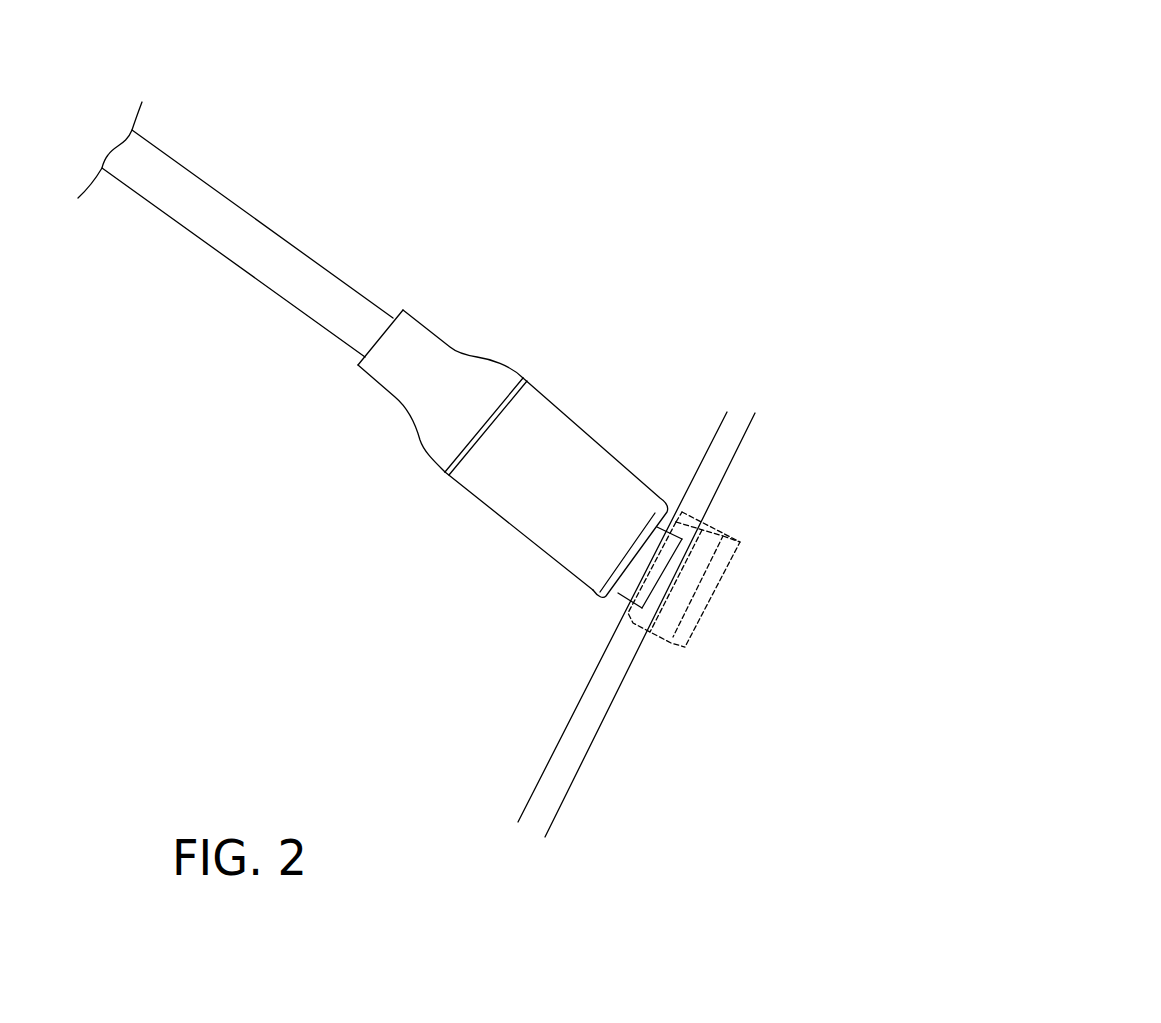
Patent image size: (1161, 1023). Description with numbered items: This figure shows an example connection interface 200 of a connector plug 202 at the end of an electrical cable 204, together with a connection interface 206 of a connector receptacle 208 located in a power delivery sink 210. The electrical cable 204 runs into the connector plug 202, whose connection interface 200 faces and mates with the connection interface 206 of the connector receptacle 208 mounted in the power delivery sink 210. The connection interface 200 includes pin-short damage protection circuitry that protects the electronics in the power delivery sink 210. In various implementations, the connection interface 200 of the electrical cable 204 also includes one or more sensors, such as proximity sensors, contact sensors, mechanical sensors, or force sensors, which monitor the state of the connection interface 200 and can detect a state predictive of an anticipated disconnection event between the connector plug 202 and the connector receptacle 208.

The connection interface 200 is at (597, 513).
The connector plug 202 is at (619, 594).
The electrical cable 204 is at (636, 208).
The connection interface 206 is at (740, 498).
The connector receptacle 208 is at (643, 608).
The power delivery sink 210 is at (693, 791).